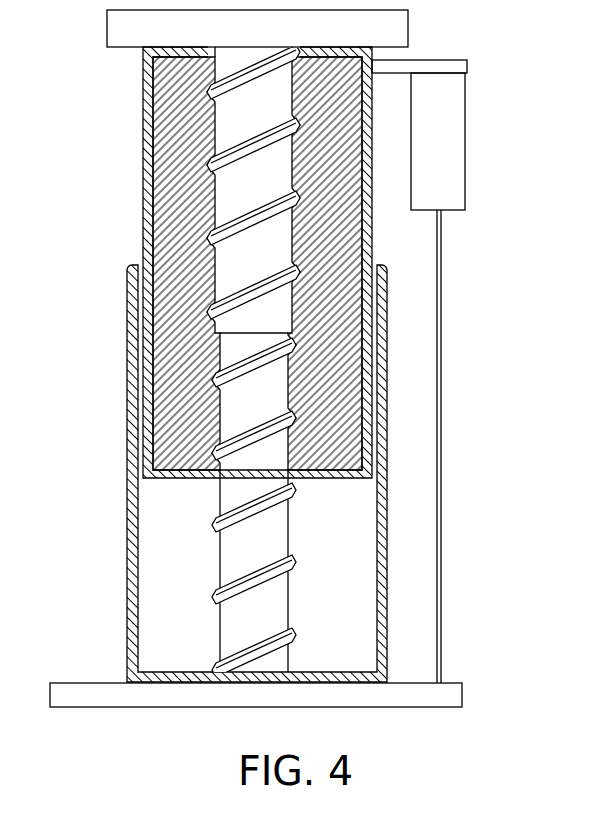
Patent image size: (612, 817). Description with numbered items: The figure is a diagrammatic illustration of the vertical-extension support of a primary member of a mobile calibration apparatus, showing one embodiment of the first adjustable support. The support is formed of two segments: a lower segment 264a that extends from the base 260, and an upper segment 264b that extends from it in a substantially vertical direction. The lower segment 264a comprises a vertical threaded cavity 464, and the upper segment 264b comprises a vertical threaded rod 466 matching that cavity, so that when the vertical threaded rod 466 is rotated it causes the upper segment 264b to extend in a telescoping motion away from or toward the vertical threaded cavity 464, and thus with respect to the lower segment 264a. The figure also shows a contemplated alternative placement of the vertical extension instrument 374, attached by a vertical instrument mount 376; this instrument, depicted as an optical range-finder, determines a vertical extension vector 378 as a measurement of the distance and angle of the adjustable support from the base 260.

The base 260 is at (463, 695).
The lower segment 264a is at (358, 612).
The upper segment 264b is at (357, 402).
The vertical extension instrument 374 is at (276, 39).
The vertical instrument mount 376 is at (467, 69).
The vertical extension vector 378 is at (441, 350).
The vertical threaded cavity 464 is at (278, 555).
The vertical threaded rod 466 is at (276, 192).